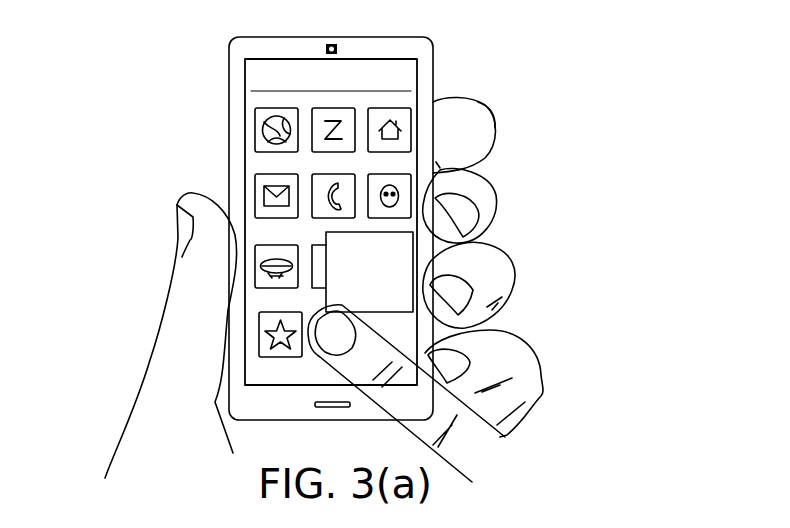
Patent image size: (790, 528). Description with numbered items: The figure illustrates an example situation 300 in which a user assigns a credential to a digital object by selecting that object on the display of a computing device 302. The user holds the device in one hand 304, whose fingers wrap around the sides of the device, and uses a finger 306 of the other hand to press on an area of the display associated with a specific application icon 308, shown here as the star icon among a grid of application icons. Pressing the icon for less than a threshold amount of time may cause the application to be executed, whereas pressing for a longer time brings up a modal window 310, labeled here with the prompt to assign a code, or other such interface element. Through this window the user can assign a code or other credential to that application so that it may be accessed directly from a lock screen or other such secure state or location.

The example situation 300 is at (611, 149).
The computing device 302 is at (228, 72).
The hand 304 is at (515, 282).
The finger 306 is at (541, 396).
The application icon 308 is at (311, 307).
The modal window 310 is at (401, 272).